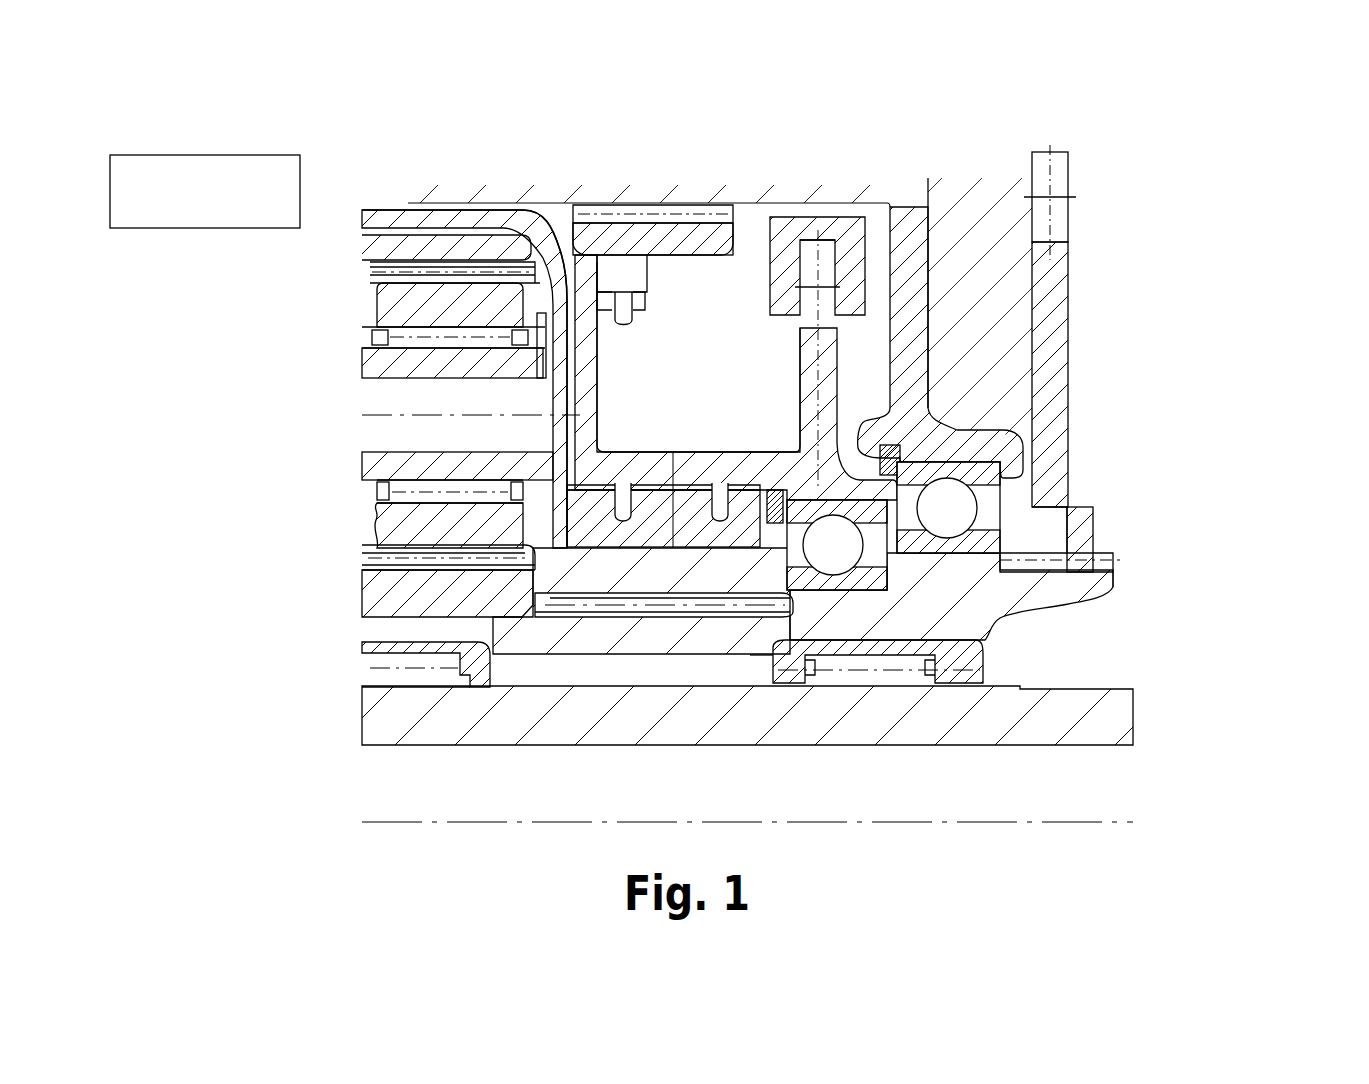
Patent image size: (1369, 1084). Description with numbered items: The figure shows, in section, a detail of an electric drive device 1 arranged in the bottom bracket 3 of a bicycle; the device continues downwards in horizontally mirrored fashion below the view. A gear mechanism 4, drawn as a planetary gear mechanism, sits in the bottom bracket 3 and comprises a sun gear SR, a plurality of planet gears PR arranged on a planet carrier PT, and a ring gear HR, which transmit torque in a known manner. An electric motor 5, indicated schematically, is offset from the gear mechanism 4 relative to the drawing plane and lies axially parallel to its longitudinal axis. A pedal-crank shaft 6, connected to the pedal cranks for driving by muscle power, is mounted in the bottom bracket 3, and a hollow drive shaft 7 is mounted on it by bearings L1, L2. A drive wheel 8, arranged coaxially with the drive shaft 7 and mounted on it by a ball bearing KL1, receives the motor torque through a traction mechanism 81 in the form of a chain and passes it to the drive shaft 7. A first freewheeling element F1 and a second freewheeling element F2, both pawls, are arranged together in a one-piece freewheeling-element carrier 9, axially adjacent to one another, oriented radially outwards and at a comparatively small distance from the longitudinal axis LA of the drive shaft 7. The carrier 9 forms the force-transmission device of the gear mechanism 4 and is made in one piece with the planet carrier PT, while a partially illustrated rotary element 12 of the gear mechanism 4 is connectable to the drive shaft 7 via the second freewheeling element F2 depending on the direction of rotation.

The electric drive device 1 is at (1150, 568).
The bottom bracket 3 is at (1168, 206).
The gear mechanism 4 is at (180, 431).
The electric motor 5 is at (205, 191).
The pedal-crank shaft 6 is at (1107, 718).
The drive shaft 7 is at (980, 607).
The drive wheel 8 is at (767, 205).
The traction mechanism 81 is at (847, 205).
The one-piece freewheeling-element carrier 9 is at (673, 580).
The rotary element 12 is at (583, 280).
The ring gear HR is at (362, 247).
The planet carrier PT is at (553, 508).
The planet gears PR is at (380, 518).
The sun gear SR is at (367, 593).
The bearing L1 is at (370, 658).
The bearing L2 is at (912, 660).
The ball bearing KL1 is at (1070, 510).
The first freewheeling element F1 is at (737, 533).
The second freewheeling element F2 is at (613, 540).
The longitudinal axis LA is at (1090, 824).